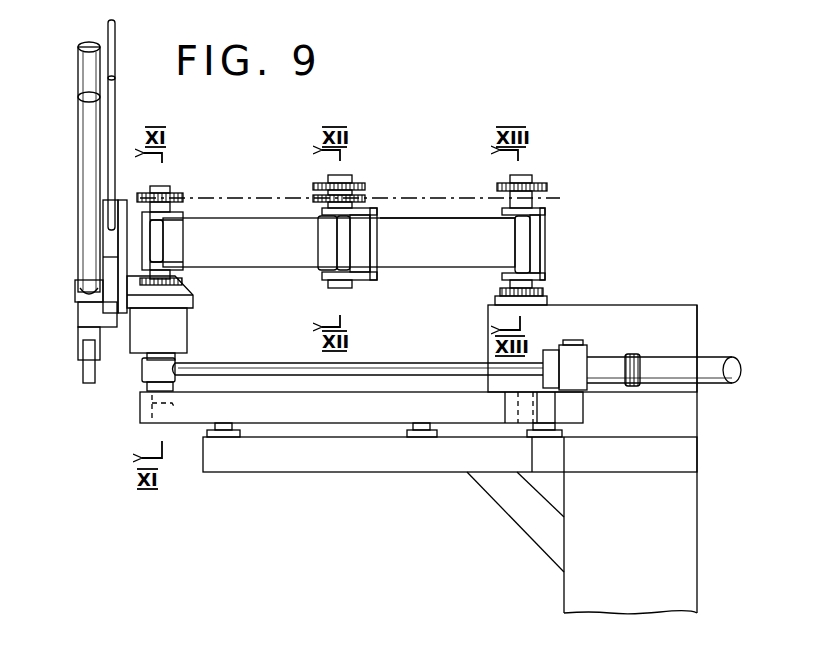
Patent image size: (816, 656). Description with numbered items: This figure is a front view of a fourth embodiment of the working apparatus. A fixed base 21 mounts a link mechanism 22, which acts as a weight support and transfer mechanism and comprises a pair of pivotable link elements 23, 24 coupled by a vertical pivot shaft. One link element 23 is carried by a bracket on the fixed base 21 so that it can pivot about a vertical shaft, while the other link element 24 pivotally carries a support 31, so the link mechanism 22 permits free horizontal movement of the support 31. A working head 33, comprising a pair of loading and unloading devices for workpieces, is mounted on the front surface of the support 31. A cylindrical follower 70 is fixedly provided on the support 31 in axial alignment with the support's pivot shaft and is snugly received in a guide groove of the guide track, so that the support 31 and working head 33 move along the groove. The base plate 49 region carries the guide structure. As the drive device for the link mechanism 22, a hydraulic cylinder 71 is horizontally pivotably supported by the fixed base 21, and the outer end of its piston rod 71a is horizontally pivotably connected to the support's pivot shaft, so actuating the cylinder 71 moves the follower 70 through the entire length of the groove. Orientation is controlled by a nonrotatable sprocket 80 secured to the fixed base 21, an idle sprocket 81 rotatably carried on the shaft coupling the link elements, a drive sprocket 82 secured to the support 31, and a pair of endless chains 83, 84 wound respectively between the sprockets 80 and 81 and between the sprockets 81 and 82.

The fixed base 21 is at (690, 412).
The link mechanism 22 is at (289, 288).
The link element 23 is at (417, 263).
The link element 24 is at (225, 257).
The support 31 is at (127, 202).
The working head 33 is at (58, 232).
The base plate 49 is at (328, 410).
The cylindrical follower 70 is at (168, 400).
The hydraulic cylinder 71 is at (680, 363).
The piston rod 71a is at (387, 362).
The nonrotatable sprocket 80 is at (548, 190).
The idle sprocket 81 is at (360, 183).
The drive sprocket 82 is at (188, 198).
The endless chain 83 is at (430, 198).
The endless chain 84 is at (250, 198).